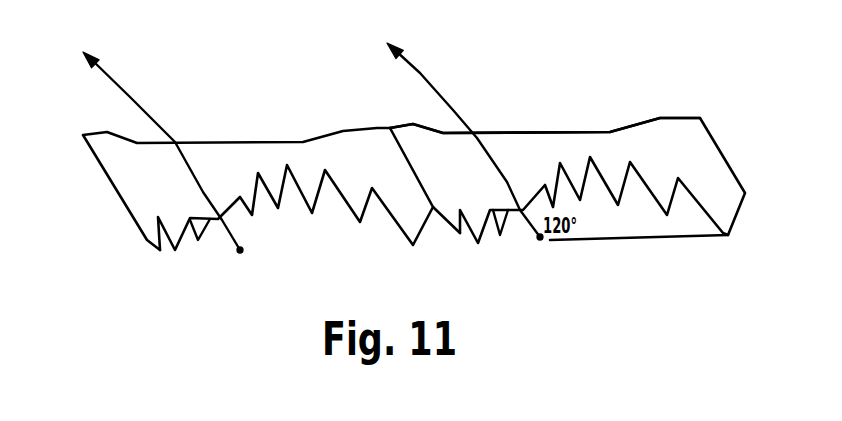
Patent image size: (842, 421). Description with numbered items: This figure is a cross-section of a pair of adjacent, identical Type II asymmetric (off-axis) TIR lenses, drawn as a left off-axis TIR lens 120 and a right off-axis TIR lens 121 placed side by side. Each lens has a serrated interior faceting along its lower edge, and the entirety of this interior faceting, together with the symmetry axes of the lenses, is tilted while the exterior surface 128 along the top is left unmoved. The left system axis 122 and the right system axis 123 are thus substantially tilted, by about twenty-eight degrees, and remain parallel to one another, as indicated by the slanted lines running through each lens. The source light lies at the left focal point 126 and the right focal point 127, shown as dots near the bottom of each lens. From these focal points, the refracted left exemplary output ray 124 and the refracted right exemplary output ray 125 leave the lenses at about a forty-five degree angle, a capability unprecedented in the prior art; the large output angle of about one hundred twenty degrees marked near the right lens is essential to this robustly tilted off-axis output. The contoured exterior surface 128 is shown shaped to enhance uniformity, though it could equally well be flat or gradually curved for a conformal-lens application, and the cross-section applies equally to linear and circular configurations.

The left off-axis TIR lens 120 is at (335, 116).
The right off-axis TIR lens 121 is at (660, 105).
The left system axis 122 is at (295, 205).
The right system axis 123 is at (586, 200).
The left exemplary output ray 124 is at (161, 143).
The right exemplary output ray 125 is at (463, 139).
The left focal point 126 is at (257, 255).
The right focal point 127 is at (527, 251).
The contoured exterior surface 128 is at (545, 122).